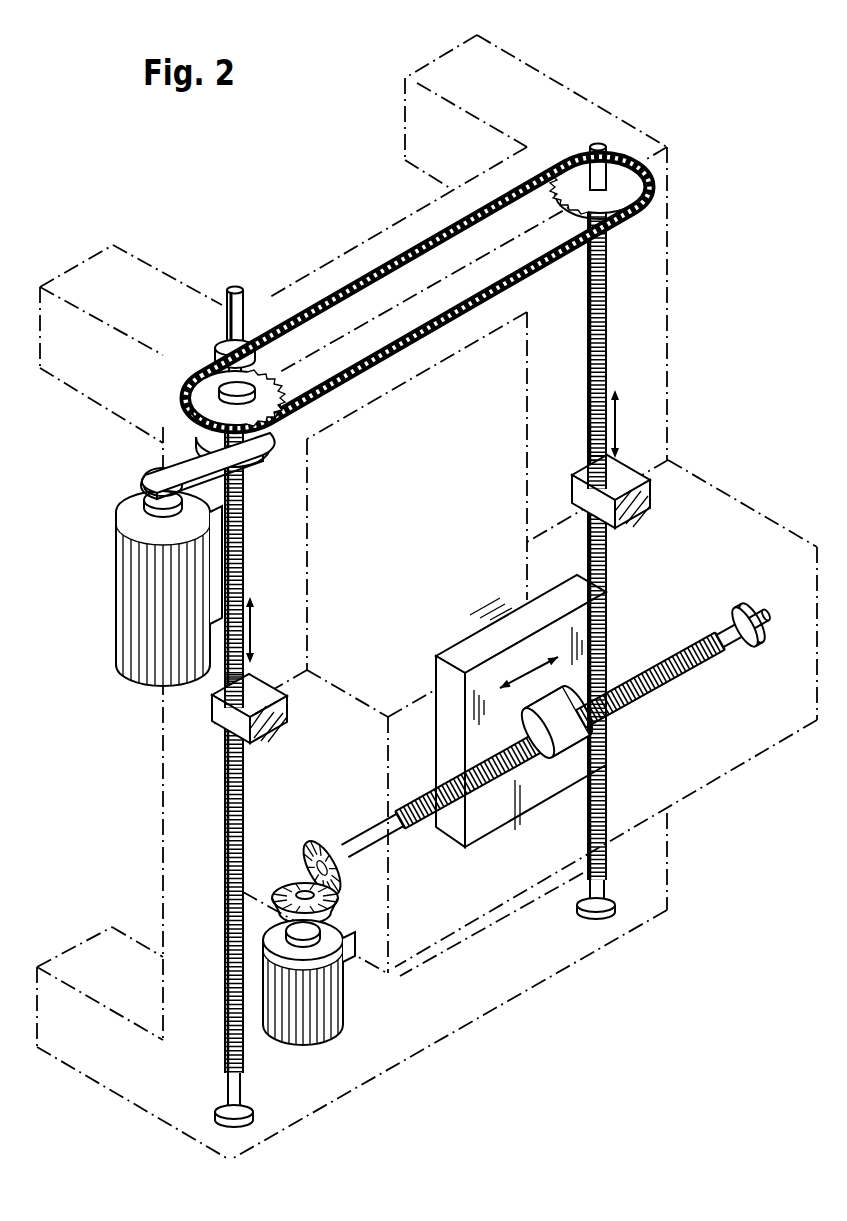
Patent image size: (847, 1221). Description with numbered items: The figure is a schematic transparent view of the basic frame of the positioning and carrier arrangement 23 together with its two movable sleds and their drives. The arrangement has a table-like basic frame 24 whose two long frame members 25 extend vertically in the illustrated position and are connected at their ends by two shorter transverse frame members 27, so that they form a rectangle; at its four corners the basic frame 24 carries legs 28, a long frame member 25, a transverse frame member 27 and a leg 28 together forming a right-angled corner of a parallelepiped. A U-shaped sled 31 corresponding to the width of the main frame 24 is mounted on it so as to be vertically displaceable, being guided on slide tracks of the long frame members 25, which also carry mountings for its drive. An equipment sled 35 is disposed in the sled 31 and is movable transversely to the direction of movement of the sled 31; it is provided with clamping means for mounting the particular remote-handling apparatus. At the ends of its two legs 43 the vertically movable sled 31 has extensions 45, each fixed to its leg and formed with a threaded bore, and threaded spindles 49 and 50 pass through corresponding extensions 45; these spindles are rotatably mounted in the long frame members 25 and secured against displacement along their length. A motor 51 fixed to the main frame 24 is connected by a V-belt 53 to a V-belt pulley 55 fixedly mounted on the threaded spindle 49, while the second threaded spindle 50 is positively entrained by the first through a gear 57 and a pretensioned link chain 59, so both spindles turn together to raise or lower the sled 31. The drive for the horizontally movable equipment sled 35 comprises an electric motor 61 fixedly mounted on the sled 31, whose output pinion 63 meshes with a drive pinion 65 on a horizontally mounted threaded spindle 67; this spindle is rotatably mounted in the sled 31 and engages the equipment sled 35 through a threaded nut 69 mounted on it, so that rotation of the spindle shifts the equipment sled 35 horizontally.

The positioning and carrier arrangement 23 is at (700, 237).
The basic frame 24 is at (669, 297).
The long frame member 25 is at (664, 362).
The transverse frame member 27 is at (378, 247).
The leg 28 is at (424, 77).
The sled 31 is at (744, 508).
The equipment sled 35 is at (468, 645).
The leg 43 is at (323, 695).
The extension 45 is at (217, 712).
The threaded spindle 49 is at (244, 558).
The threaded spindle 50 is at (588, 382).
The motor 51 is at (127, 605).
The V-belt 53 is at (243, 460).
The V-belt pulley 55 is at (265, 438).
The gear 57 is at (287, 412).
The link chain 59 is at (395, 350).
The electric motor 61 is at (293, 1037).
The output pinion 63 is at (285, 891).
The drive pinion 65 is at (316, 842).
The threaded spindle 67 is at (410, 812).
The threaded nut 69 is at (584, 733).